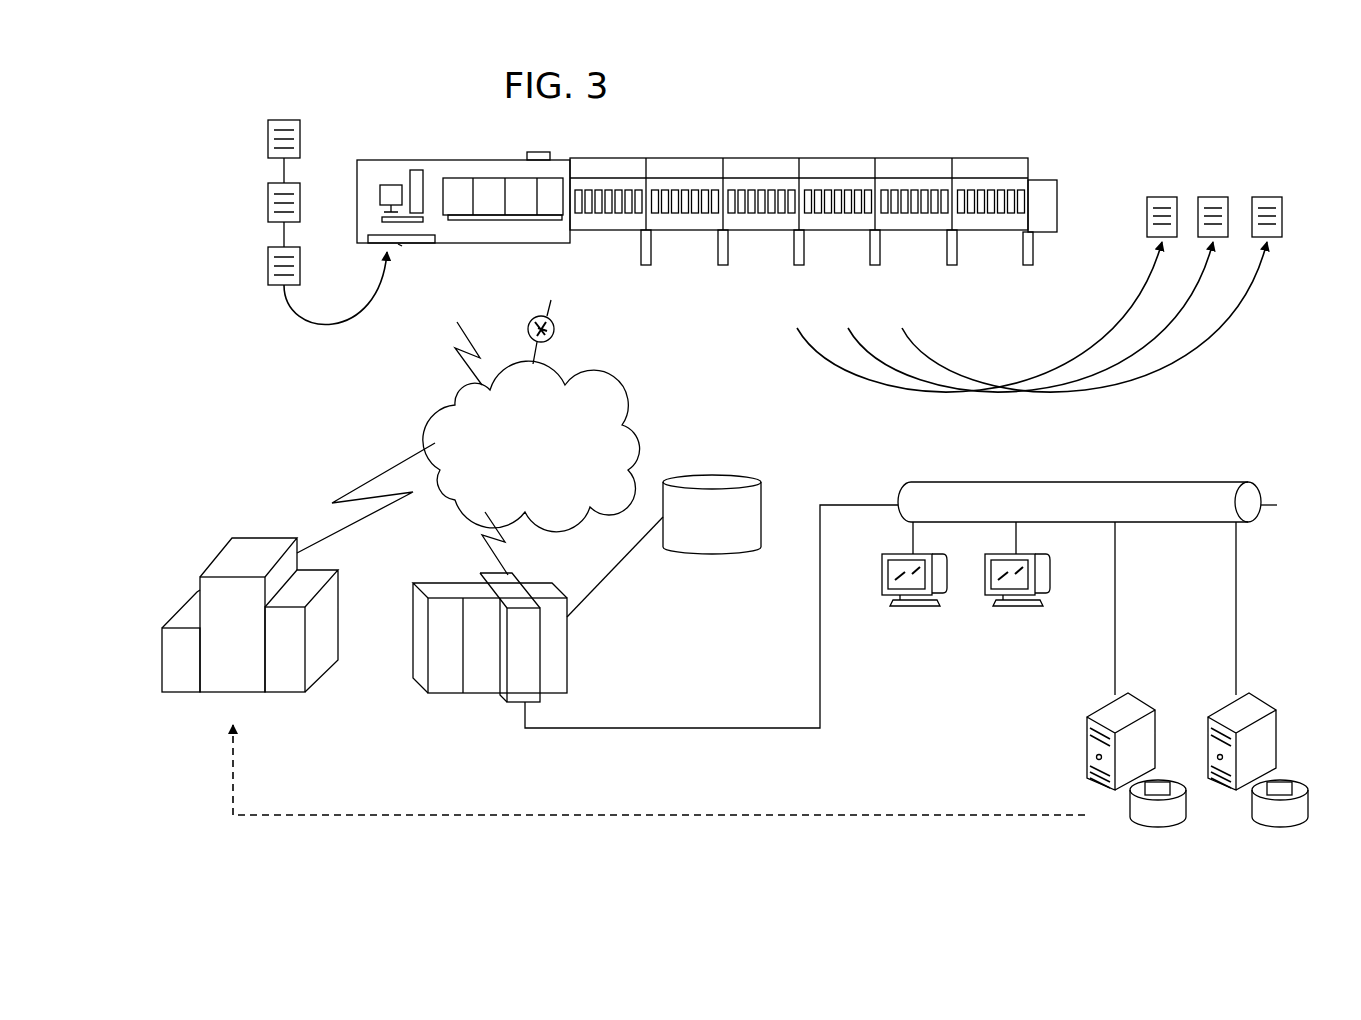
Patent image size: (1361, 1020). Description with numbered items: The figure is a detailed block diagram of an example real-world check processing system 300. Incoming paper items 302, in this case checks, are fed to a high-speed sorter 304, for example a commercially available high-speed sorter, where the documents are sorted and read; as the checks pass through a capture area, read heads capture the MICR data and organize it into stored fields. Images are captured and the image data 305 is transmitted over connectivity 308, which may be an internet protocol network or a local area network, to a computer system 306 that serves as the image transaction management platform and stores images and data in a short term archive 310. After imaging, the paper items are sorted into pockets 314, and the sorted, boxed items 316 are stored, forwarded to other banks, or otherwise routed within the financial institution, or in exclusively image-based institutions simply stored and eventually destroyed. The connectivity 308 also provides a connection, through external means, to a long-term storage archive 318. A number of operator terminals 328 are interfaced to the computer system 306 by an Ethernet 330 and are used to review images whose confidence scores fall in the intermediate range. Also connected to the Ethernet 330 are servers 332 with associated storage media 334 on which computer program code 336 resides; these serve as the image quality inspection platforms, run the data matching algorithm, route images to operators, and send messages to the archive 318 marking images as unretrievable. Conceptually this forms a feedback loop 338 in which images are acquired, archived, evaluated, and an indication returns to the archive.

The system 300 is at (1152, 140).
The incoming paper items 302 is at (258, 122).
The high-speed sorter 304 is at (465, 158).
The image data 305 is at (555, 338).
The computer system 306 is at (450, 695).
The connectivity 308 is at (627, 467).
The short term archive 310 is at (712, 552).
The pockets 314 is at (1022, 195).
The sorted, boxed items 316 is at (1133, 238).
The long-term storage archive 318 is at (240, 537).
The operator terminals 328 is at (918, 662).
The Ethernet 330 is at (937, 480).
The servers 332 is at (1143, 700).
The storage media 334 is at (1128, 810).
The computer program code 336 is at (1163, 778).
The feedback loop 338 is at (722, 815).